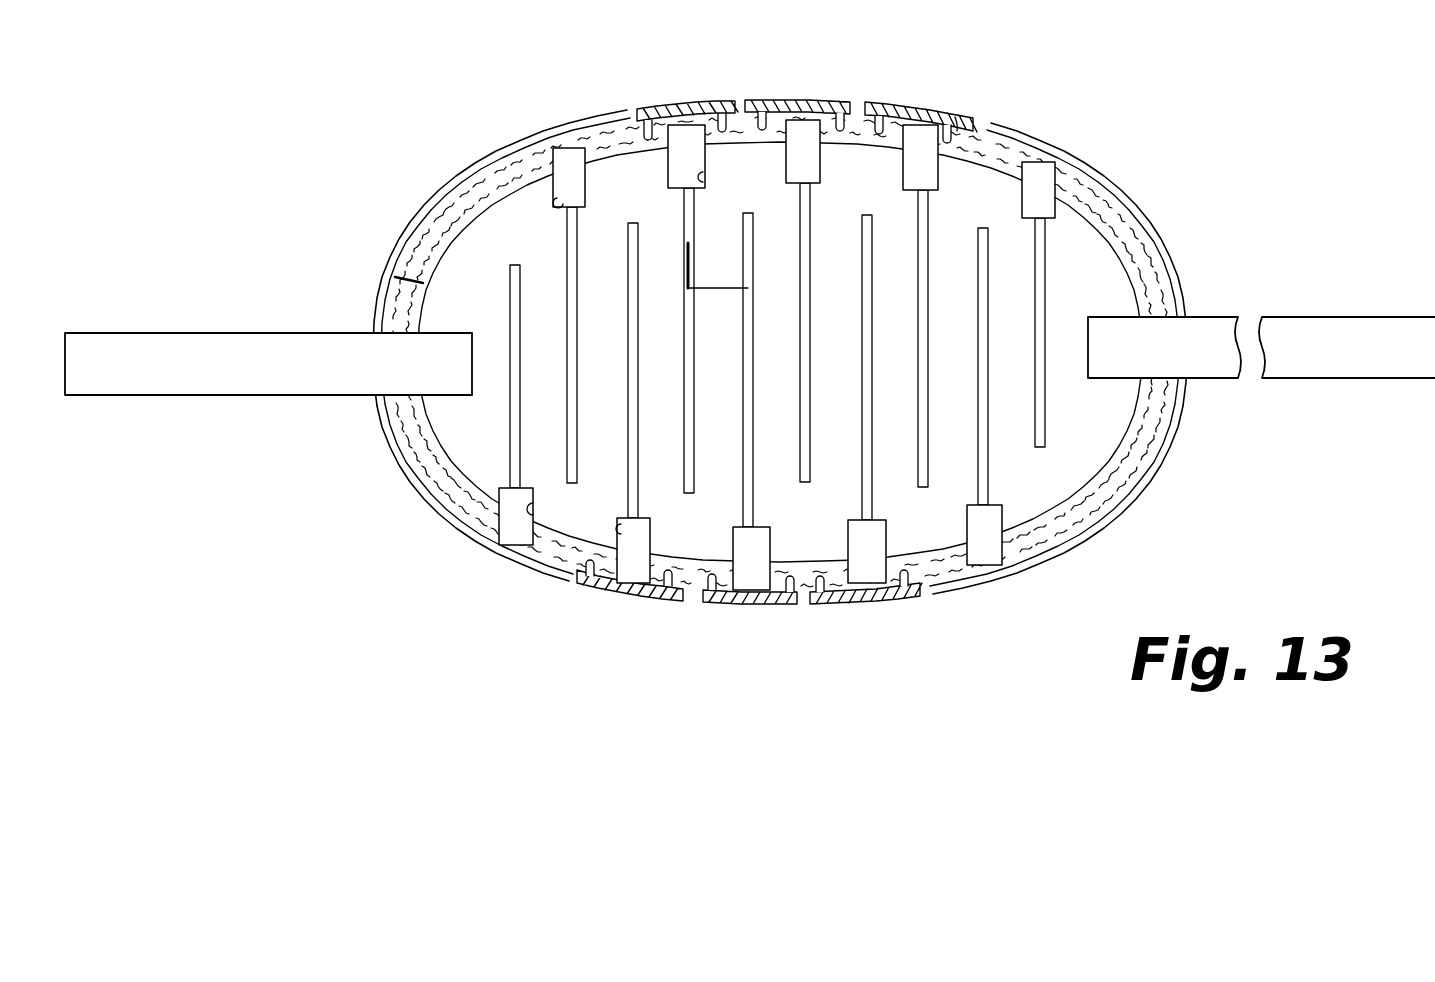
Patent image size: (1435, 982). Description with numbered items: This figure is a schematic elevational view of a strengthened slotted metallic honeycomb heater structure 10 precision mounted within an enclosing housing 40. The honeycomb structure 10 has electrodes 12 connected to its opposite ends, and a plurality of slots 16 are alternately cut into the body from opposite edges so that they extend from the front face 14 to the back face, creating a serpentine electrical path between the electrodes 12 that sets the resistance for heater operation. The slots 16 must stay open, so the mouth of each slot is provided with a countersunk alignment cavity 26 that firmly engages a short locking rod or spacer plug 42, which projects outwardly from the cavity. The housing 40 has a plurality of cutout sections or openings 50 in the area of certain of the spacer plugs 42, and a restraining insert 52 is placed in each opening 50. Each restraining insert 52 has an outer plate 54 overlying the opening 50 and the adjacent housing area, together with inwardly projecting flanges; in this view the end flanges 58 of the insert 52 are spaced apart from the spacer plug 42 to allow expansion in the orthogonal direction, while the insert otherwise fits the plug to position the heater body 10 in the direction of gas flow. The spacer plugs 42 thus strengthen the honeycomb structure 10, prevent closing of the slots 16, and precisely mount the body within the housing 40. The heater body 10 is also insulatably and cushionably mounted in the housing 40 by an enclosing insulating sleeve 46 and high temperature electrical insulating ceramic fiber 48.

The slotted metallic honeycomb heater structure 10 is at (1138, 210).
The electrodes 12 is at (216, 340).
The front face 14 is at (638, 48).
The slots 16 is at (681, 430).
The countersunk alignment cavity 26 is at (560, 207).
The housing 40 is at (1175, 262).
The short locking rod or spacer plug 42 is at (580, 181).
The insulating sleeve 46 is at (393, 279).
The high temperature electrical insulating ceramic fiber 48 is at (440, 198).
The cutout sections or openings 50 is at (773, 570).
The restraining insert 52 is at (895, 100).
The outer plate 54 is at (957, 117).
The end flanges 58 is at (872, 127).